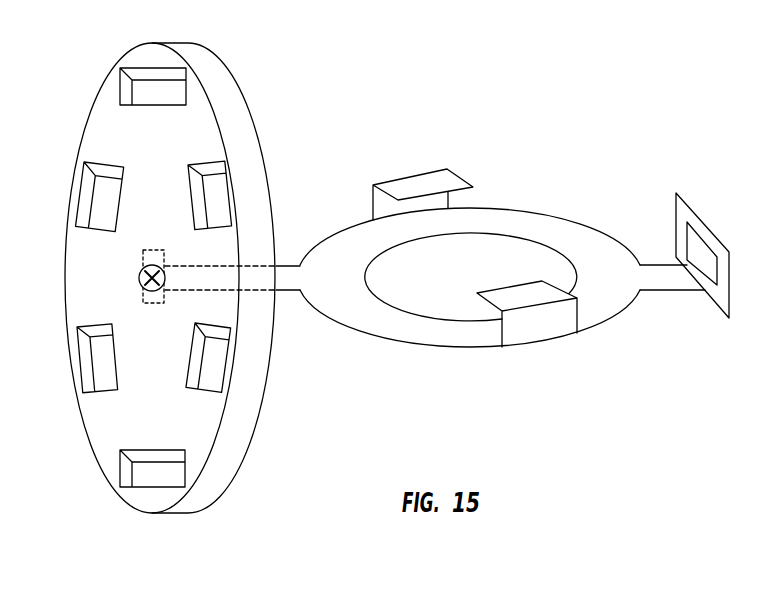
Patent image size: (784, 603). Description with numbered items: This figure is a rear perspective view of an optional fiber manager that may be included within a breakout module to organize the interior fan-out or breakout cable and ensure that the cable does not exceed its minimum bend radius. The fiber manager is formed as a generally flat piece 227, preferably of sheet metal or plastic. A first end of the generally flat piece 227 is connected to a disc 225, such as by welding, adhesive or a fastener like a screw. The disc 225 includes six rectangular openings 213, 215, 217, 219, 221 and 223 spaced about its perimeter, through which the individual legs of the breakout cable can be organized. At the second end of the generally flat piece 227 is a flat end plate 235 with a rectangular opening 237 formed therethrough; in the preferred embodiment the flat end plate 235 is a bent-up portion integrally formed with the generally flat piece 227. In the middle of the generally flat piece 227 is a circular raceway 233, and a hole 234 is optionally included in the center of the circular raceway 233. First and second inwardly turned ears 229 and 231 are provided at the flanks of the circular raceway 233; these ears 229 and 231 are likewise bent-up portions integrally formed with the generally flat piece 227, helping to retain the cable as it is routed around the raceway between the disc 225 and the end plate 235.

The rectangular opening 213 is at (163, 92).
The rectangular opening 215 is at (220, 212).
The rectangular opening 217 is at (207, 375).
The rectangular opening 219 is at (158, 475).
The rectangular opening 221 is at (103, 368).
The rectangular opening 223 is at (105, 210).
The disc 225 is at (158, 344).
The generally flat piece 227 is at (412, 332).
The first inwardly turned ear 229 is at (525, 332).
The second inwardly turned ear 231 is at (427, 180).
The circular raceway 233 is at (462, 217).
The hole 234 is at (465, 279).
The flat end plate 235 is at (681, 230).
The rectangular opening 237 is at (712, 268).